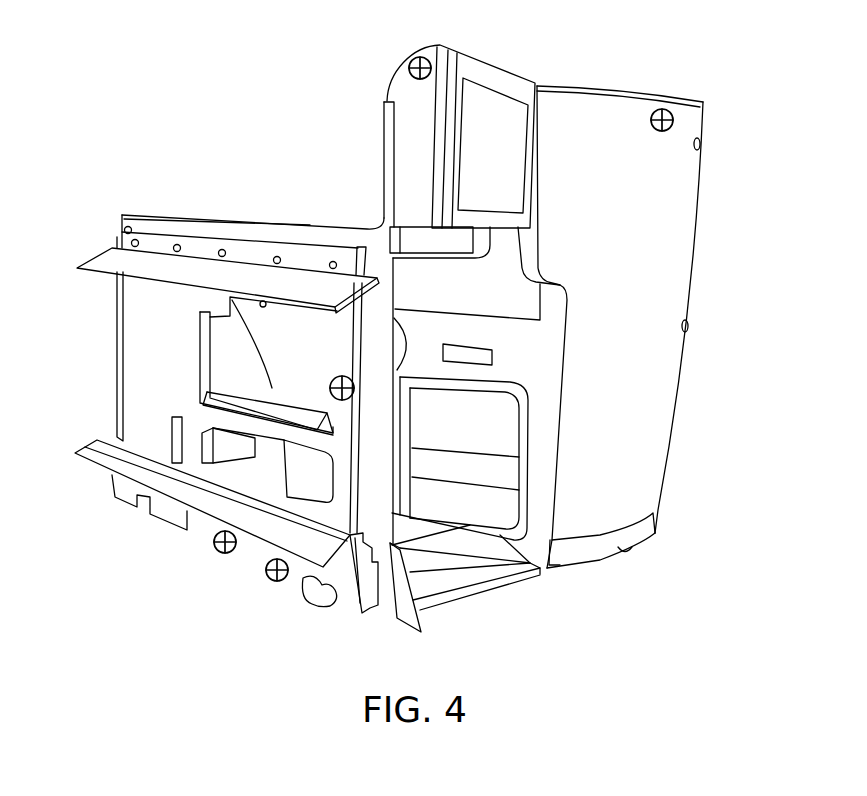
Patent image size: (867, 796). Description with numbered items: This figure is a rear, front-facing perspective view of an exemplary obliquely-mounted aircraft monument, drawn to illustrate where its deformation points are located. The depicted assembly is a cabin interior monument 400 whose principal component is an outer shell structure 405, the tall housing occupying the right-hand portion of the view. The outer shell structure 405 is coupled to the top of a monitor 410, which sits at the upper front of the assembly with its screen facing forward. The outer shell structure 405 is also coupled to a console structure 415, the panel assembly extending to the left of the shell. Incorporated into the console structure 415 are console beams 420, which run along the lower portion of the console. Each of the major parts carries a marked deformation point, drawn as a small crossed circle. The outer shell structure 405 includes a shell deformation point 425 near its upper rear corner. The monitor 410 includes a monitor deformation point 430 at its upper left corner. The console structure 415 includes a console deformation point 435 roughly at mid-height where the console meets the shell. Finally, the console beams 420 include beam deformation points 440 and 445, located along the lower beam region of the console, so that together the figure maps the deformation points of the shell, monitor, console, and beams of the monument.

The cabin interior monument 400 is at (300, 121).
The outer shell structure 405 is at (678, 460).
The monitor 410 is at (490, 72).
The console structure 415 is at (115, 357).
The console beams 420 is at (243, 560).
The shell deformation point 425 is at (664, 108).
The monitor deformation point 430 is at (410, 62).
The console deformation point 435 is at (354, 386).
The beam deformation point 440 is at (213, 547).
The beam deformation point 445 is at (276, 582).